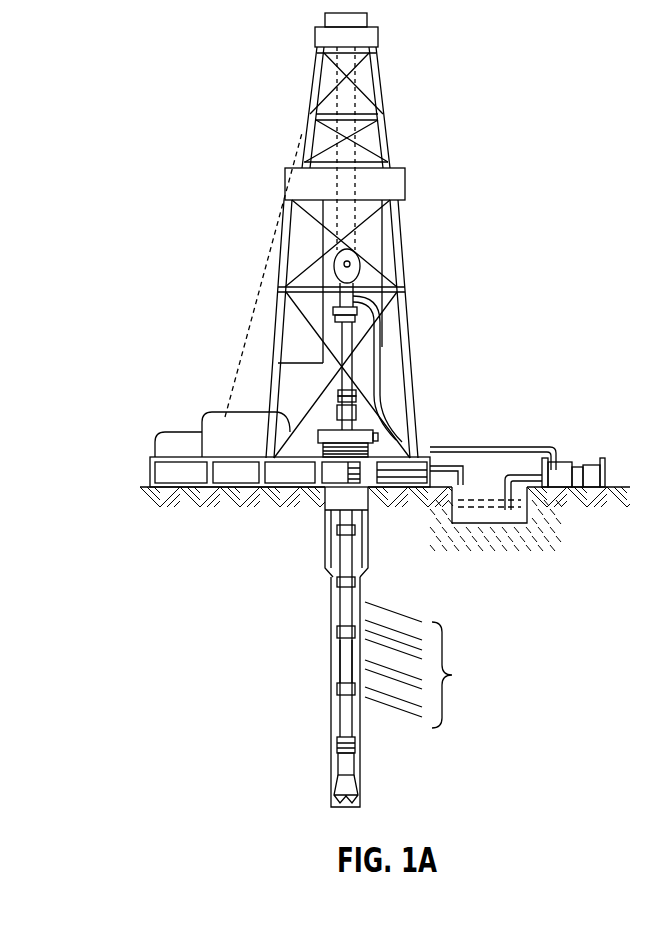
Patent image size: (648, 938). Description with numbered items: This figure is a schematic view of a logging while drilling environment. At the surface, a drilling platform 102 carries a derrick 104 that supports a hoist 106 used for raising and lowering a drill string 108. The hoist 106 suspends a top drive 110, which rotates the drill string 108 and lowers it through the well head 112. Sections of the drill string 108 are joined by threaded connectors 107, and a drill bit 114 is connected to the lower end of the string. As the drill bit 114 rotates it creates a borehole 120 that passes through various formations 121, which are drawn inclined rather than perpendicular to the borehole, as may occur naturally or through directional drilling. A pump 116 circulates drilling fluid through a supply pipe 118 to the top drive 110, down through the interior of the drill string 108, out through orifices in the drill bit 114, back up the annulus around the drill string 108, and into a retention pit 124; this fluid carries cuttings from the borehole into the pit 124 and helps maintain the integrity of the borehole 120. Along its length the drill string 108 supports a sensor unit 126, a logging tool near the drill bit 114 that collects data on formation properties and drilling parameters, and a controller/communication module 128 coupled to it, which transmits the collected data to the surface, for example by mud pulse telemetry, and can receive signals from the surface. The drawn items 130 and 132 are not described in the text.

The drilling platform 102 is at (150, 470).
The derrick 104 is at (380, 125).
The hoist 106 is at (360, 255).
The top drive 110 is at (330, 335).
The swivel 130 is at (356, 397).
The well head 112 is at (360, 412).
The supply pipe 118 is at (513, 447).
The pump 116 is at (562, 462).
The retention pit 124 is at (500, 512).
The threaded connectors 107 is at (333, 582).
The drill string 108 is at (355, 600).
The borehole 120 is at (332, 636).
The drill pipe 132 is at (333, 648).
The formations 121 is at (431, 665).
The controller/communication module 128 is at (340, 745).
The sensor unit 126 is at (338, 765).
The drill bit 114 is at (355, 797).